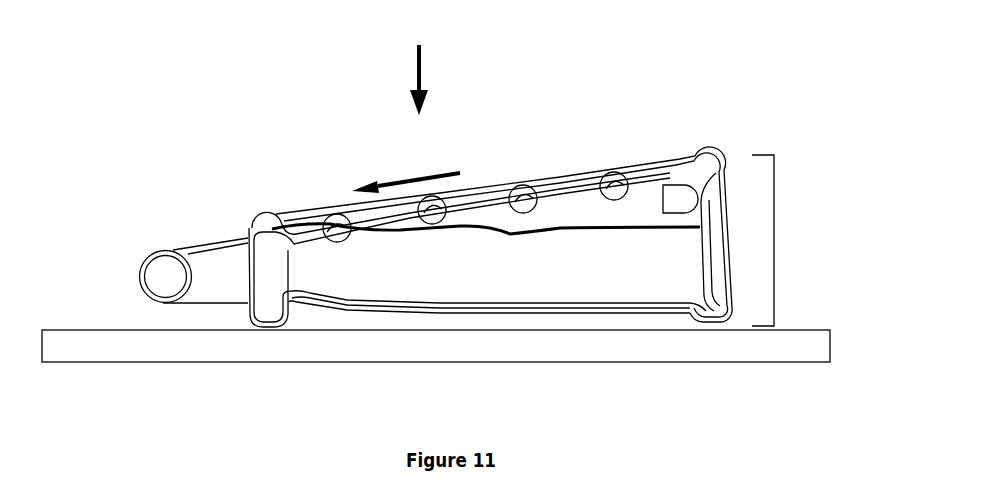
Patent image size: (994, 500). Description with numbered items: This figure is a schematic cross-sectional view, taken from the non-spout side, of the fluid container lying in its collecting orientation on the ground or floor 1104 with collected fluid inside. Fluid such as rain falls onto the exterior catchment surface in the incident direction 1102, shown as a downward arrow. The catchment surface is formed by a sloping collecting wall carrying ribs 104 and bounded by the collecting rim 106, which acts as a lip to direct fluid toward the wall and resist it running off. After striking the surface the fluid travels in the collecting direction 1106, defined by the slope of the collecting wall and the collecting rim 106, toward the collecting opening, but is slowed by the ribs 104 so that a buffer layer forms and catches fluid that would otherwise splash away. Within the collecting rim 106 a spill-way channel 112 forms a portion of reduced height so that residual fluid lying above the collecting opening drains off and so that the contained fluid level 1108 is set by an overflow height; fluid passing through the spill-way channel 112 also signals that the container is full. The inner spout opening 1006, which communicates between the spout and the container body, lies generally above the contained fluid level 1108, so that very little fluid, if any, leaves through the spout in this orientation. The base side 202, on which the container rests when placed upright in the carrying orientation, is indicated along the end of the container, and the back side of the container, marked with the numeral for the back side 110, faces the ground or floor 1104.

The collecting rim 106 is at (253, 205).
The spill-way channel 112 is at (250, 227).
The incident direction 1102 is at (423, 77).
The collecting direction 1106 is at (424, 175).
The inner spout opening 1006 is at (670, 200).
The ribs 104 is at (530, 208).
The collected fluid level 1108 is at (536, 245).
The base side 202 is at (774, 257).
The ground or floor 1104 is at (436, 346).
The back side 110 is at (556, 319).